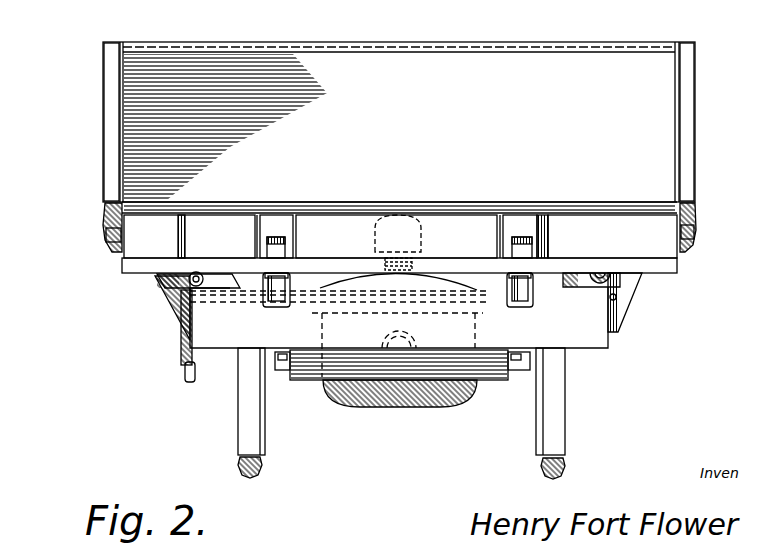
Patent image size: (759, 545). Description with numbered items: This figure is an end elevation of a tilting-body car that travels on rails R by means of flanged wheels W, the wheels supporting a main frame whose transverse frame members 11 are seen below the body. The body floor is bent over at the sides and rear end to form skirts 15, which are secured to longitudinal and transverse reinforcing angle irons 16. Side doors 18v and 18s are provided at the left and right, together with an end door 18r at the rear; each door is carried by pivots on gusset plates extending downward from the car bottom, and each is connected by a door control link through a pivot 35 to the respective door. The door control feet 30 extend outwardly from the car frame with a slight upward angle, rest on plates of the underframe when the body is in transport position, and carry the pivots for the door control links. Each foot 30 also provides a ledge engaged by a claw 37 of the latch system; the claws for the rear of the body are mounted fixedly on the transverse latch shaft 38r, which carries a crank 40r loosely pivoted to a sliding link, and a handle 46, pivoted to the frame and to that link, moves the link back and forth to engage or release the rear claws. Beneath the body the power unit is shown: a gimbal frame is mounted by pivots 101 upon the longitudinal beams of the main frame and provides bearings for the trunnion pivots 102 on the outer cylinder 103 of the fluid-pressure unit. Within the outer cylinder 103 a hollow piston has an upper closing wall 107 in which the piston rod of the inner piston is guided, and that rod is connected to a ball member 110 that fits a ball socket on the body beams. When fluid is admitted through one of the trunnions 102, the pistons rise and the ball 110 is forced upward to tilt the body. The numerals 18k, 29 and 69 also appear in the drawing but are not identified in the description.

The end door 18r is at (537, 70).
The side door 18v is at (103, 146).
The side door 18s is at (695, 122).
The bracket 18k is at (102, 235).
The pivot 35 is at (102, 243).
The skirt 15 is at (612, 236).
The ball member 110 is at (423, 240).
The reinforcing angle iron 16 is at (667, 268).
The transverse frame member 11 is at (600, 345).
The door control foot 30 is at (222, 276).
The pivot 29 is at (196, 272).
The crank 40r is at (160, 312).
The transverse latch shaft 38r is at (217, 305).
The handle 46 is at (186, 378).
The bracket 69 is at (172, 290).
The claw 37 is at (277, 280).
The upper closing wall 107 is at (340, 283).
The trunnion pivot 102 is at (418, 338).
The outer cylinder 103 is at (360, 407).
The pivot 101 is at (275, 370).
The flanged wheel W is at (576, 398).
The rail R is at (238, 468).